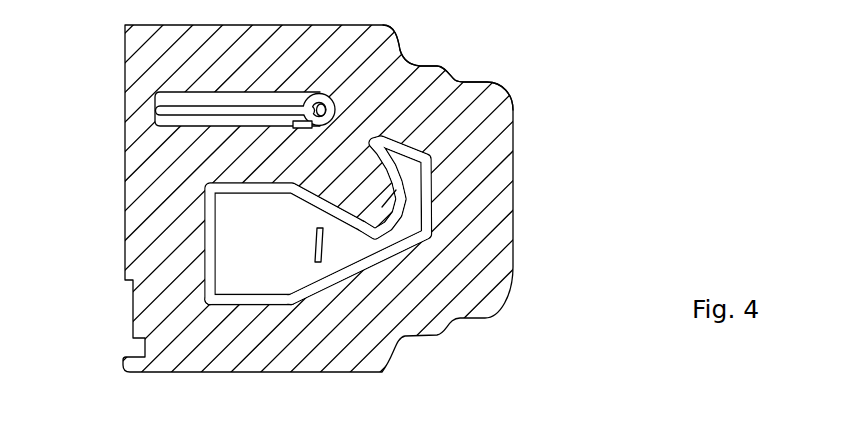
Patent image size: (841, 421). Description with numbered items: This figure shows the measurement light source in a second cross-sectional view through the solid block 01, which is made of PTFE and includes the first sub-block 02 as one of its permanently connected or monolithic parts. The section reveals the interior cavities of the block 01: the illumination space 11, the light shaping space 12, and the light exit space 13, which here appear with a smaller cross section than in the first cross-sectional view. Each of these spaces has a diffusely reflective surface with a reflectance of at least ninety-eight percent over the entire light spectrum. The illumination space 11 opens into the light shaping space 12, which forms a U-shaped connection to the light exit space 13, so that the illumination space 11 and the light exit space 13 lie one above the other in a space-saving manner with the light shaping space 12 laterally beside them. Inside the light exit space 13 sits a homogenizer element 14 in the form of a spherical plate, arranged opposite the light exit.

The block 01 is at (503, 280).
The first sub-block 02 is at (425, 82).
The illumination space 11 is at (210, 96).
The light shaping space 12 is at (412, 183).
The light exit space 13 is at (245, 247).
The homogenizer element 14 is at (323, 245).